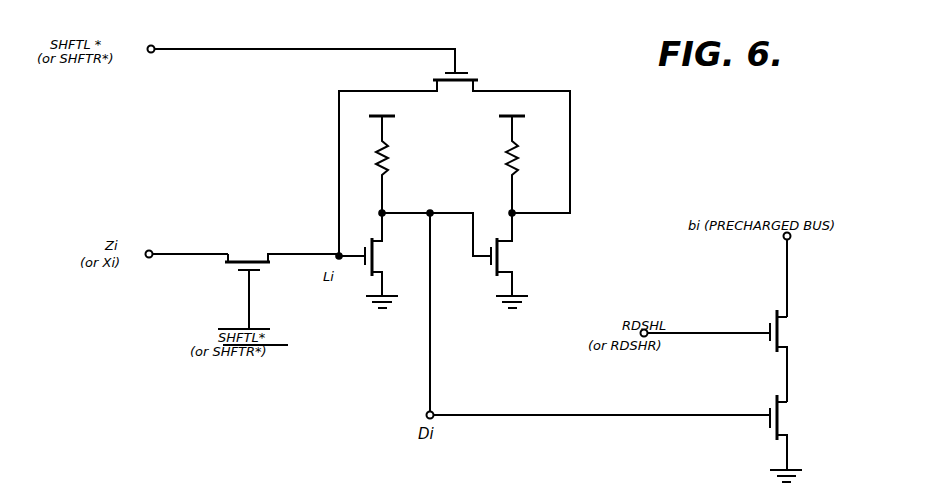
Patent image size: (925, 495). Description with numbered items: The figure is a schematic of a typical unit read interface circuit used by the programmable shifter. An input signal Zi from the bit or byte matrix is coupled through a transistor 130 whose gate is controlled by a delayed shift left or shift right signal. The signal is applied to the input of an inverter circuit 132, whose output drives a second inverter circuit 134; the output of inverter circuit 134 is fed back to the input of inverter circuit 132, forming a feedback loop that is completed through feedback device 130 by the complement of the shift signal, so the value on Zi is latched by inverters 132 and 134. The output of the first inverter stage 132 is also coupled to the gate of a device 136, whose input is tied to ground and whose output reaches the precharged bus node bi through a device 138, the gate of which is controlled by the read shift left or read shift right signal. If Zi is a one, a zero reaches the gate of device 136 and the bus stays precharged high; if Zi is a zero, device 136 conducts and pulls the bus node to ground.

The transistor 130 is at (238, 269).
The inverter circuit 132 is at (363, 270).
The inverter circuit 134 is at (491, 270).
The device 136 is at (770, 432).
The device 138 is at (770, 315).